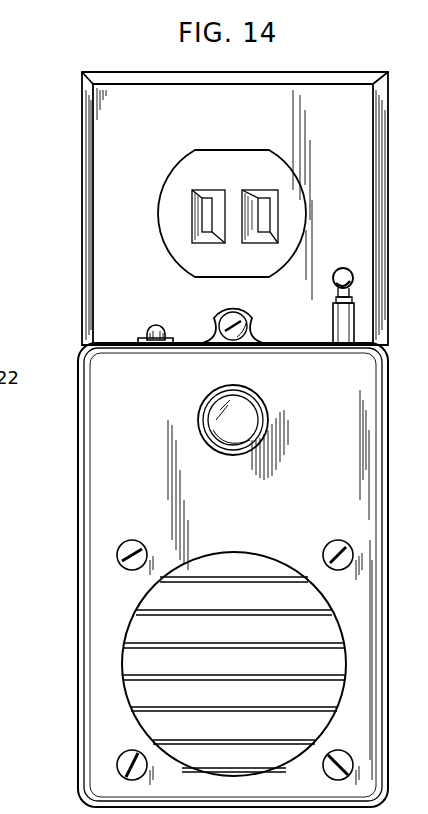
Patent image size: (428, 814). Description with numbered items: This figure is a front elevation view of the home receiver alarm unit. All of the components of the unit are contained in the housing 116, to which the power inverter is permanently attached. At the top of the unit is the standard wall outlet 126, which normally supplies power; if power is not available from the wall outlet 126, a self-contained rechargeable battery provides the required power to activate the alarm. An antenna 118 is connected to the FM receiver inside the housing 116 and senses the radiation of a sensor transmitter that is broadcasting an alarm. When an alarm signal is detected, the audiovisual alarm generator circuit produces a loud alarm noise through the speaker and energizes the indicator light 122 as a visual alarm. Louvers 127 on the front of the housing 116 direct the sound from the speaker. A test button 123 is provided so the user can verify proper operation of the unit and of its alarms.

The housing 116 is at (97, 465).
The antenna 118 is at (353, 276).
The indicator light 122 is at (253, 407).
The test button 123 is at (157, 327).
The standard wall outlet 126 is at (212, 154).
The louvers 127 is at (138, 630).